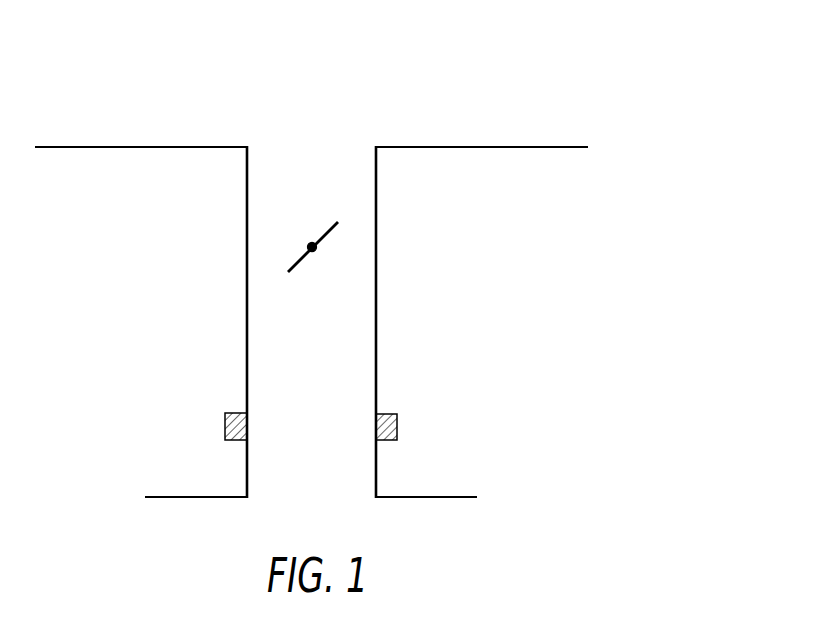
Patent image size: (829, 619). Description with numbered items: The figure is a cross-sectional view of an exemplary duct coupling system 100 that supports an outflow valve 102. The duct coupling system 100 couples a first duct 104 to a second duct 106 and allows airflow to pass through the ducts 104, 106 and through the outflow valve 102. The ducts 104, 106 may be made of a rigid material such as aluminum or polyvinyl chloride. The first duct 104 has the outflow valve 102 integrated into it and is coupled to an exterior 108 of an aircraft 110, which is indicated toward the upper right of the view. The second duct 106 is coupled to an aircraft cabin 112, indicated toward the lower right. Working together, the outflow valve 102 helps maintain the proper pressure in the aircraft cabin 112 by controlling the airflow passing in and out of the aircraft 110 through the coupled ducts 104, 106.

The duct coupling system 100 is at (176, 428).
The outflow valve 102 is at (304, 210).
The first duct 104 is at (377, 227).
The second duct 106 is at (378, 471).
The exterior 108 is at (68, 147).
The aircraft 110 is at (592, 71).
The aircraft cabin 112 is at (424, 498).